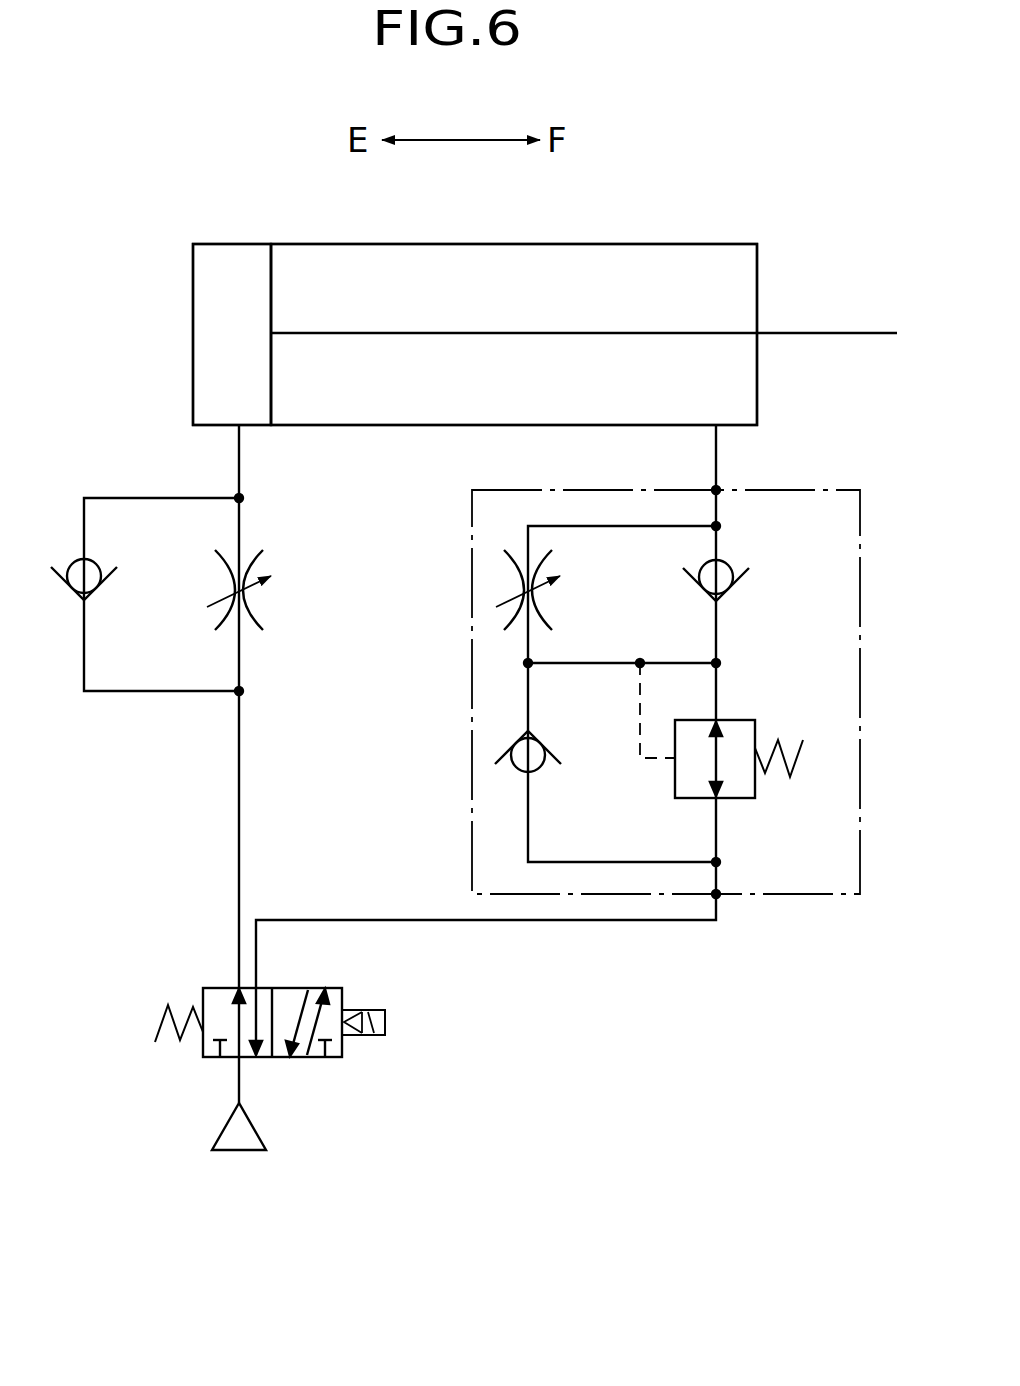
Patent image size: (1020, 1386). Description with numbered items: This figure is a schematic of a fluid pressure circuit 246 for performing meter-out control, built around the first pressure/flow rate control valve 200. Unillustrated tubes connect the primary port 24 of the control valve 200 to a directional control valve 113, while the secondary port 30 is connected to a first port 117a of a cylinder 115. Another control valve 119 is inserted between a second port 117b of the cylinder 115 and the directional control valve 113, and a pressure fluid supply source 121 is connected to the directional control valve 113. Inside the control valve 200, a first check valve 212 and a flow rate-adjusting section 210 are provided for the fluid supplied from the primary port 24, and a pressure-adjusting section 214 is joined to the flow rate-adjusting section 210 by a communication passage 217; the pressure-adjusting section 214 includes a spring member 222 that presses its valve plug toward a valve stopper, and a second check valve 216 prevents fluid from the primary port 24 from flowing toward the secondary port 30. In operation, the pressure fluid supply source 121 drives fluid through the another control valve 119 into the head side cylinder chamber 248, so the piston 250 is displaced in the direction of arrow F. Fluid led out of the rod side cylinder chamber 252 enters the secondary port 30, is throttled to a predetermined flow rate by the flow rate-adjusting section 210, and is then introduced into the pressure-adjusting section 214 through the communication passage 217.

The fluid pressure circuit 246 is at (545, 272).
The cylinder 115 is at (497, 241).
The head side cylinder chamber 248 is at (229, 278).
The piston 250 is at (273, 273).
The rod side cylinder chamber 252 is at (727, 283).
The first port 117a is at (716, 428).
The second port 117b is at (240, 428).
The secondary port 30 is at (784, 479).
The another control valve 119 is at (152, 705).
The first pressure/flow rate control valve 200 is at (703, 692).
The flow rate-adjusting section 210 is at (546, 600).
The first check valve 212 is at (727, 565).
The pressure-adjusting section 214 is at (738, 721).
The second check valve 216 is at (541, 768).
The communication passage 217 is at (529, 665).
The spring member 222 is at (804, 744).
The primary port 24 is at (717, 895).
The directional control valve 113 is at (343, 1058).
The pressure fluid supply source 121 is at (264, 1135).